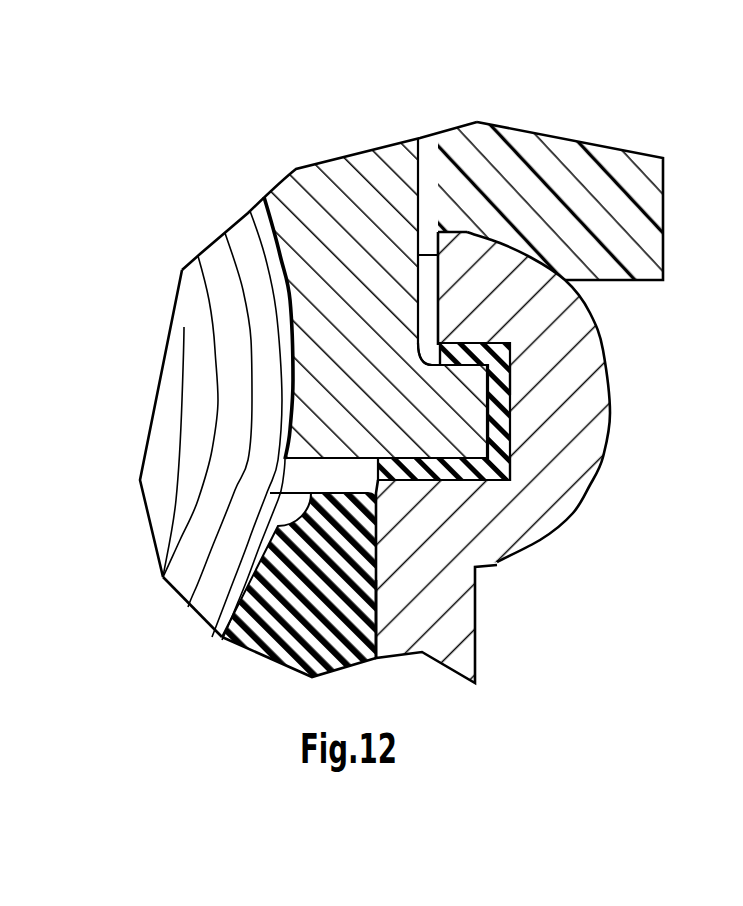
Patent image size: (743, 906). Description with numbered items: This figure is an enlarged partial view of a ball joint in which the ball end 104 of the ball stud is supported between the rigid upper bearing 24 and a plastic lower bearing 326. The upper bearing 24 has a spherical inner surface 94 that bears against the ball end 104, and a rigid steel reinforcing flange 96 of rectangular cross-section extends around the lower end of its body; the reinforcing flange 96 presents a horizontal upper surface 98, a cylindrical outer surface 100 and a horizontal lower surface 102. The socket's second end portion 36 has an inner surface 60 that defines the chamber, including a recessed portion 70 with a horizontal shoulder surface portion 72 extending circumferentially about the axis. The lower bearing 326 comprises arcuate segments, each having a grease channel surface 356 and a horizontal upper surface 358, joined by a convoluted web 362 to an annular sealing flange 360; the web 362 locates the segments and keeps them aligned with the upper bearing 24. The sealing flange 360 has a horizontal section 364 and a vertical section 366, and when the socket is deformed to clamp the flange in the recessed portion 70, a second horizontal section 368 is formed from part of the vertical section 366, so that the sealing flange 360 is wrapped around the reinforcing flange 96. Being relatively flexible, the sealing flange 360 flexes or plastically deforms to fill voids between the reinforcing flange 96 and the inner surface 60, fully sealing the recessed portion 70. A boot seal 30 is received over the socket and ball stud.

The upper bearing 24 is at (326, 160).
The boot seal 30 is at (535, 155).
The spherical inner surface 94 is at (273, 247).
The ball end 104 is at (210, 323).
The recessed portion 70 is at (272, 411).
The web 362 is at (312, 477).
The grease channel surface 356 is at (287, 508).
The horizontal upper surface 358 is at (250, 576).
The inner surface 60 is at (395, 583).
The second horizontal section 368 is at (447, 345).
The horizontal upper surface 98 is at (548, 336).
The vertical section 366 is at (510, 392).
The reinforcing flange 96 is at (467, 410).
The cylindrical outer surface 100 is at (490, 427).
The sealing flange 360 is at (524, 449).
The horizontal lower surface 102 is at (510, 462).
The horizontal section 364 is at (445, 480).
The horizontal shoulder surface portion 72 is at (446, 480).
The lower bearing 326 is at (387, 615).
The second end portion 36 is at (731, 635).